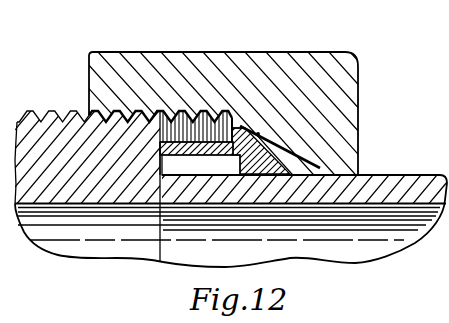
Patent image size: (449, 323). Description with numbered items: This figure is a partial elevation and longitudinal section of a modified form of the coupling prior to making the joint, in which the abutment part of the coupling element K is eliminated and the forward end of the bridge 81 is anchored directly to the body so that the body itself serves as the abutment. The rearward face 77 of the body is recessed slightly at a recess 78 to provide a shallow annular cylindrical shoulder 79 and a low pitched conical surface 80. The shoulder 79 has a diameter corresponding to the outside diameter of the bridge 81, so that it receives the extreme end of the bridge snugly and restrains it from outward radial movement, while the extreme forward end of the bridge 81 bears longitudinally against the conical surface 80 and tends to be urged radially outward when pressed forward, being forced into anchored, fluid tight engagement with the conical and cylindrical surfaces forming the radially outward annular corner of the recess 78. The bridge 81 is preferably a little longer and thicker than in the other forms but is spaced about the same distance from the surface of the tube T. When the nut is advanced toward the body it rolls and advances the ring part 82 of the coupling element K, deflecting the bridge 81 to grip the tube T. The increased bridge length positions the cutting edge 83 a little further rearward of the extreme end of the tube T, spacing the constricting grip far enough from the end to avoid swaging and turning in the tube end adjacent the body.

The rearward face 77 is at (157, 129).
The recess 78 is at (157, 151).
The annular cylindrical shoulder 79 is at (158, 130).
The conical surface 80 is at (278, 157).
The bridge 81 is at (192, 124).
The ring part 82 is at (258, 133).
The cutting edge 83 is at (238, 160).
The coupling element K is at (258, 133).
The tube T is at (402, 192).